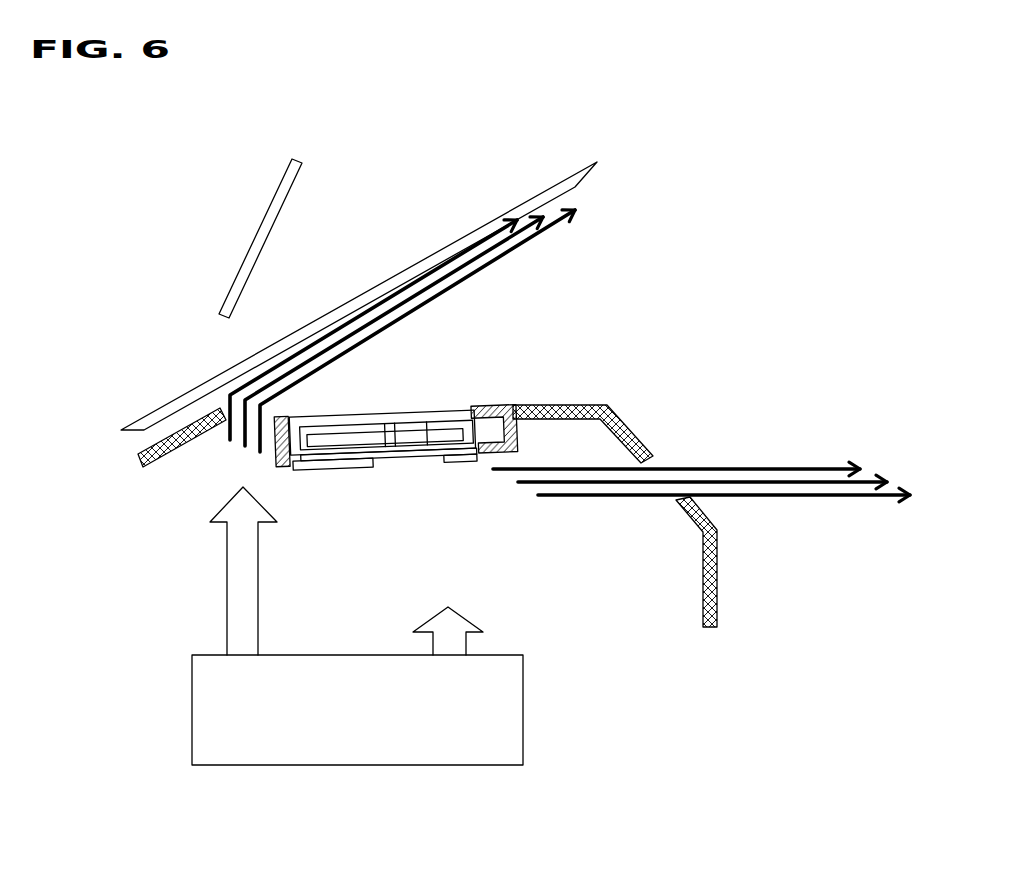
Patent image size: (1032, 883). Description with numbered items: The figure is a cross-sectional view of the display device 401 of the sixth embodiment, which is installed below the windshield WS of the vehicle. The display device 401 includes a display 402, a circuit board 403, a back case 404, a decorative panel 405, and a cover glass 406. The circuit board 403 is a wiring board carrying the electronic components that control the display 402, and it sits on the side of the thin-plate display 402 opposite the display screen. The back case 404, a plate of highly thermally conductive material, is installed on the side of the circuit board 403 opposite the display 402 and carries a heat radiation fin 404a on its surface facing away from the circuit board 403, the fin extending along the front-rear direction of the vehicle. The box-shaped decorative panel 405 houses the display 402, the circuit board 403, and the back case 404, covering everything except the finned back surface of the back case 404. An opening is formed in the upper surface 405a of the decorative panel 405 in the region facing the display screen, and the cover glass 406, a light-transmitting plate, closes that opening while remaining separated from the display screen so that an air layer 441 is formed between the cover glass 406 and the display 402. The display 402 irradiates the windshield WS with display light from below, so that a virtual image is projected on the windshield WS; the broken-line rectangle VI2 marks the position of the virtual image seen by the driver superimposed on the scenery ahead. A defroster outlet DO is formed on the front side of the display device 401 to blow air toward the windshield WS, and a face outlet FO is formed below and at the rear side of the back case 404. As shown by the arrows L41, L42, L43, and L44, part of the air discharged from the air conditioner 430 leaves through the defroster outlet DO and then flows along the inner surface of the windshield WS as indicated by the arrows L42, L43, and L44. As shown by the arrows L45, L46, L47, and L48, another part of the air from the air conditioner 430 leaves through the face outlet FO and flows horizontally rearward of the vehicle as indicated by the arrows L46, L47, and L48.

The windshield WS is at (313, 318).
The virtual image position VI2 is at (273, 193).
The defroster outlet DO is at (222, 410).
The arrow L42 is at (445, 263).
The arrow L43 is at (490, 243).
The arrow L44 is at (555, 218).
The display device 401 is at (438, 420).
The back case 404 is at (427, 418).
The display 402 is at (340, 442).
The circuit board 403 is at (398, 447).
The air layer 441 is at (358, 432).
The cover glass 406 is at (383, 470).
The heat radiation fin 404a is at (348, 483).
The decorative panel 405 is at (508, 407).
The upper surface of decorative panel 405a is at (473, 405).
The face outlet FO is at (663, 460).
The arrow L46 is at (810, 466).
The arrow L47 is at (838, 480).
The arrow L48 is at (888, 492).
The arrow L41 is at (226, 587).
The arrow L45 is at (432, 622).
The air conditioner 430 is at (523, 685).